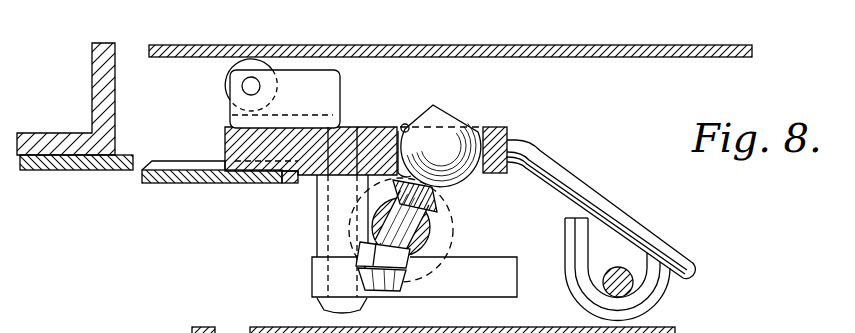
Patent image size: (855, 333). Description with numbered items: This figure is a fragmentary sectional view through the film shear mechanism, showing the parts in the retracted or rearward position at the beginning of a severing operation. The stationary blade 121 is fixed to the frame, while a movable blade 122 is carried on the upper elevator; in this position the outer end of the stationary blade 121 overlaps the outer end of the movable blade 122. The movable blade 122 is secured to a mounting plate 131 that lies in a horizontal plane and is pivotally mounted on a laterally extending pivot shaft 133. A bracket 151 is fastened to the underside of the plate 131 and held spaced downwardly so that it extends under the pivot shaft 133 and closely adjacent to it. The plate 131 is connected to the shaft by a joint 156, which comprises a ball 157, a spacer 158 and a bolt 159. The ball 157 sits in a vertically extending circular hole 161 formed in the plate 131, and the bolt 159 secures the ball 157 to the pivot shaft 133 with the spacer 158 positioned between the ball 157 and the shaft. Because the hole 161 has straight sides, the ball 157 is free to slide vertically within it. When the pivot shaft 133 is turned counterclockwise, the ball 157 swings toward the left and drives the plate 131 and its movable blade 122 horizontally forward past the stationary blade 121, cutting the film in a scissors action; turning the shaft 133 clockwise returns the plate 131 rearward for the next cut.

The stationary blade 121 is at (68, 172).
The movable blade 122 is at (218, 178).
The mounting plate 131 is at (225, 140).
The pivot shaft 133 is at (448, 240).
The bracket 151 is at (517, 282).
The joint 156 is at (436, 85).
The ball 157 is at (450, 126).
The spacer 158 is at (453, 206).
The bolt 159 is at (407, 278).
The circular hole 161 is at (406, 124).